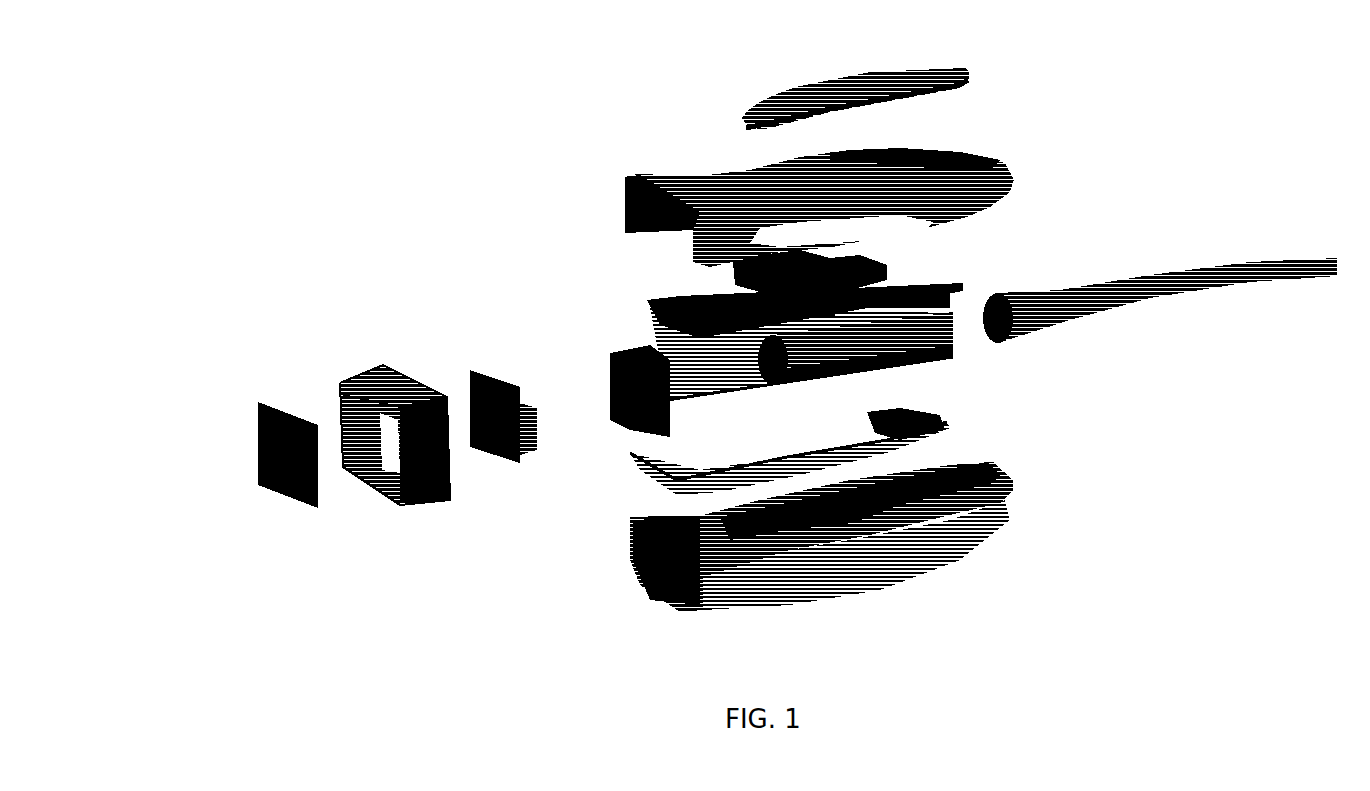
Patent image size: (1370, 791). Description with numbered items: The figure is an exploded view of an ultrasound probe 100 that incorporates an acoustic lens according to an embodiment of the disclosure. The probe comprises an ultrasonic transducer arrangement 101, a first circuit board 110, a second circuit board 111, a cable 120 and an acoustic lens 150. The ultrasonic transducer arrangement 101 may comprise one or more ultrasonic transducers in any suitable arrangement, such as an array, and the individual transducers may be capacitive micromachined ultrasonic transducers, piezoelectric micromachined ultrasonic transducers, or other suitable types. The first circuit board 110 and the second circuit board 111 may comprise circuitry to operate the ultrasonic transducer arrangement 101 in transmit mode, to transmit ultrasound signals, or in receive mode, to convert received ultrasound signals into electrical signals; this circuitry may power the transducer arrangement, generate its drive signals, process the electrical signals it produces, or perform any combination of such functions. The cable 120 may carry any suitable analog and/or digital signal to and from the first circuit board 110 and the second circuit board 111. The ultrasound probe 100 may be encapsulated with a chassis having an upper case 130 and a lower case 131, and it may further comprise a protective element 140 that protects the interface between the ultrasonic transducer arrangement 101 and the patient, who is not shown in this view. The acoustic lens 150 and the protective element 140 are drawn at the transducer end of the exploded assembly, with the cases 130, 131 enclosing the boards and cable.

The ultrasound probe 100 is at (368, 165).
The ultrasonic transducer arrangement 101 is at (470, 350).
The first circuit board 110 is at (940, 260).
The second circuit board 111 is at (859, 451).
The cable 120 is at (1152, 272).
The upper case 130 is at (1000, 150).
The lower case 131 is at (1000, 503).
The protective element 140 is at (350, 368).
The acoustic lens 150 is at (253, 405).